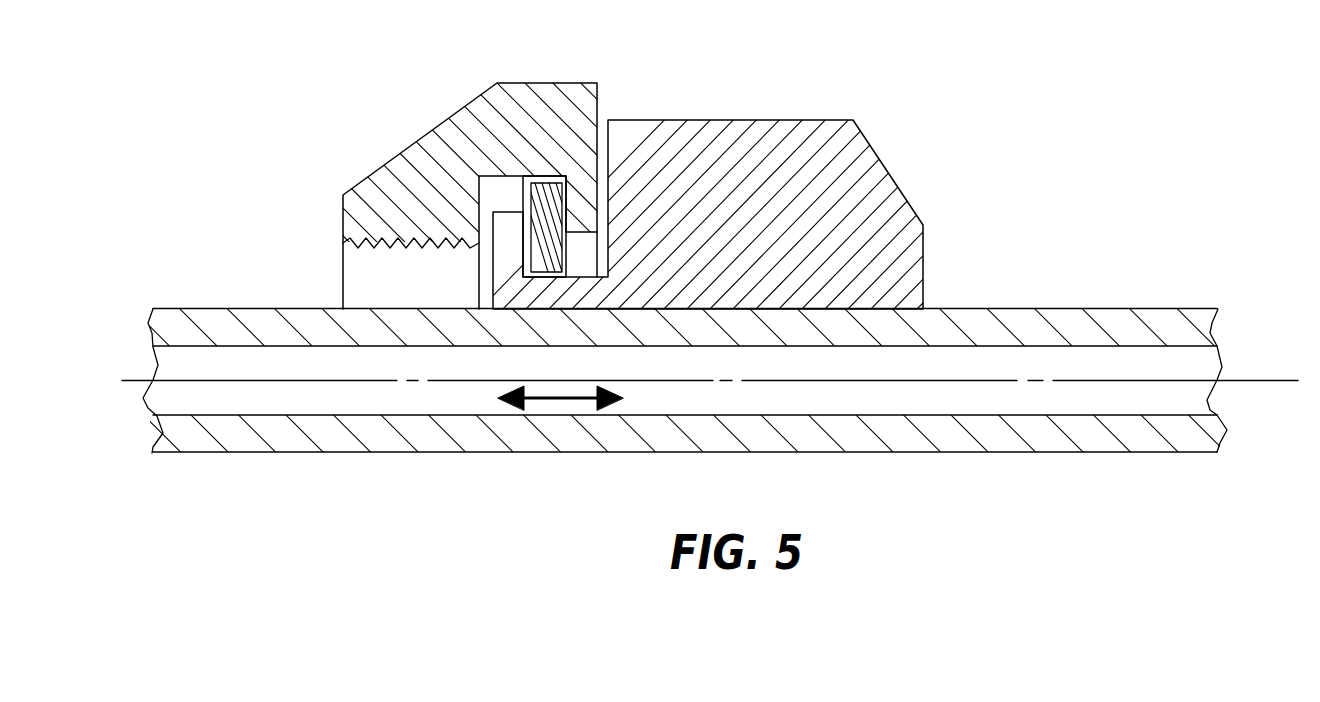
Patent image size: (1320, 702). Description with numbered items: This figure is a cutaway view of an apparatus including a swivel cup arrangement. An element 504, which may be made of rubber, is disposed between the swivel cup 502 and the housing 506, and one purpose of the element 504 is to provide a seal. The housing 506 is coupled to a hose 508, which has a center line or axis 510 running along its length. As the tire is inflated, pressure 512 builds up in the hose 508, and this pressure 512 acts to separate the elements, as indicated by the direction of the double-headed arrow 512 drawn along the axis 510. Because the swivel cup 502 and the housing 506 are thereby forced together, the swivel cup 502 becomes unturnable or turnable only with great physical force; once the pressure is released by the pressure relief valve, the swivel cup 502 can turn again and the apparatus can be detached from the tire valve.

The swivel cup 502 is at (540, 83).
The element 504 is at (553, 180).
The housing 506 is at (832, 120).
The hose 508 is at (1010, 308).
The center line or axis 510 is at (792, 378).
The pressure 512 is at (557, 402).